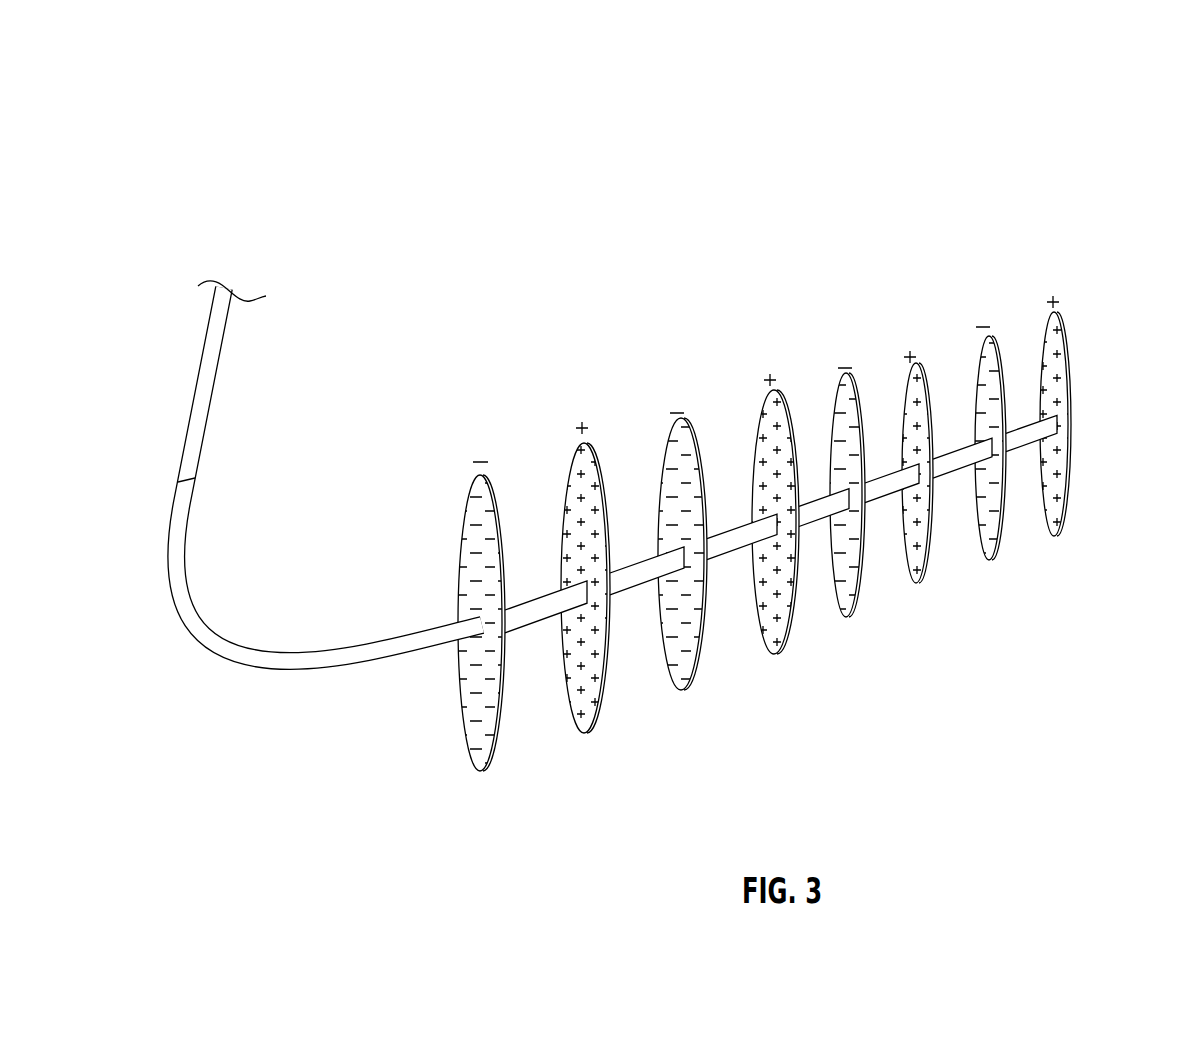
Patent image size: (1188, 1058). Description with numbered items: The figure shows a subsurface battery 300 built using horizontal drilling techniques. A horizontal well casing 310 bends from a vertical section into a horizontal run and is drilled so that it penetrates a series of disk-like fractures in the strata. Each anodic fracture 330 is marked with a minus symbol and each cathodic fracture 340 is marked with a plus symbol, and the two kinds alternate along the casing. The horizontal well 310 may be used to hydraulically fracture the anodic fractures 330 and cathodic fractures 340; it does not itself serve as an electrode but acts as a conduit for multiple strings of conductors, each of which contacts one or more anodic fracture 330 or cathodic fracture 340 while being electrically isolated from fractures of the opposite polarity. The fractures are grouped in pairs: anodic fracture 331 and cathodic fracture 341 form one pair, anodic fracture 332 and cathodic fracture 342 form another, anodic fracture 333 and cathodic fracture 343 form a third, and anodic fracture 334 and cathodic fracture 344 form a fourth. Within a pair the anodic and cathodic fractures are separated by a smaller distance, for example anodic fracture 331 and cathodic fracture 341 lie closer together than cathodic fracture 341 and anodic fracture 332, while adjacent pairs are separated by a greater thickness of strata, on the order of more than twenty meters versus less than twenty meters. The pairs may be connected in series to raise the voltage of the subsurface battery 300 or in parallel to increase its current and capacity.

The subsurface battery 300 is at (232, 82).
The horizontal well casing 310 is at (222, 370).
The anodic fracture 330 is at (505, 747).
The anodic fracture 331 is at (488, 769).
The anodic fracture 332 is at (683, 688).
The anodic fracture 333 is at (848, 617).
The anodic fracture 334 is at (989, 558).
The cathodic fracture 340 is at (596, 440).
The cathodic fracture 341 is at (588, 451).
The cathodic fracture 342 is at (757, 450).
The cathodic fracture 343 is at (908, 382).
The cathodic fracture 344 is at (1071, 414).